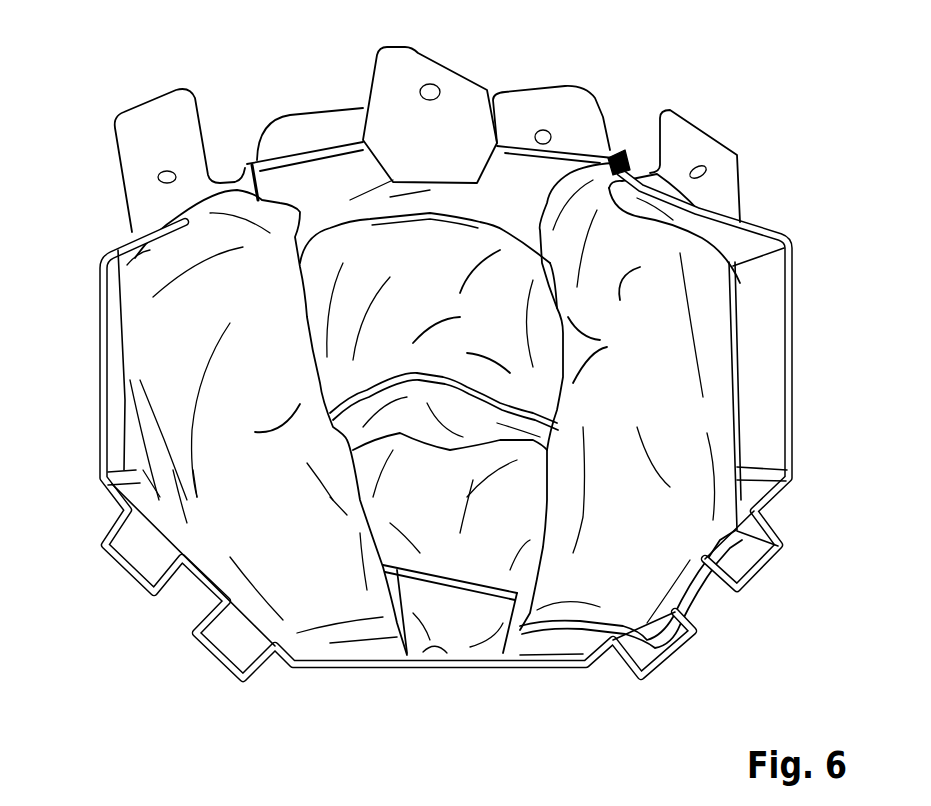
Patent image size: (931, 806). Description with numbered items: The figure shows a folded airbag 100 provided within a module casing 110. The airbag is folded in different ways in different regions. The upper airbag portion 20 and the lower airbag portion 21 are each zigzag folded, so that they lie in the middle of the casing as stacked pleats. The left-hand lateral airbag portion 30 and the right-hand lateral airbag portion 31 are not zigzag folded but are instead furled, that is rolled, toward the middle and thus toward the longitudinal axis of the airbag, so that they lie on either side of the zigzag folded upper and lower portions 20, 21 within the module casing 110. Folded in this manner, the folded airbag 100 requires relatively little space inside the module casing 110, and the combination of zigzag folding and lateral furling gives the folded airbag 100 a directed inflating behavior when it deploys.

The upper airbag portion 20 is at (430, 243).
The lower airbag portion 21 is at (462, 560).
The left-hand lateral airbag portion 30 is at (160, 338).
The right-hand lateral airbag portion 31 is at (670, 327).
The folded airbag 100 is at (620, 160).
The module casing 110 is at (793, 385).